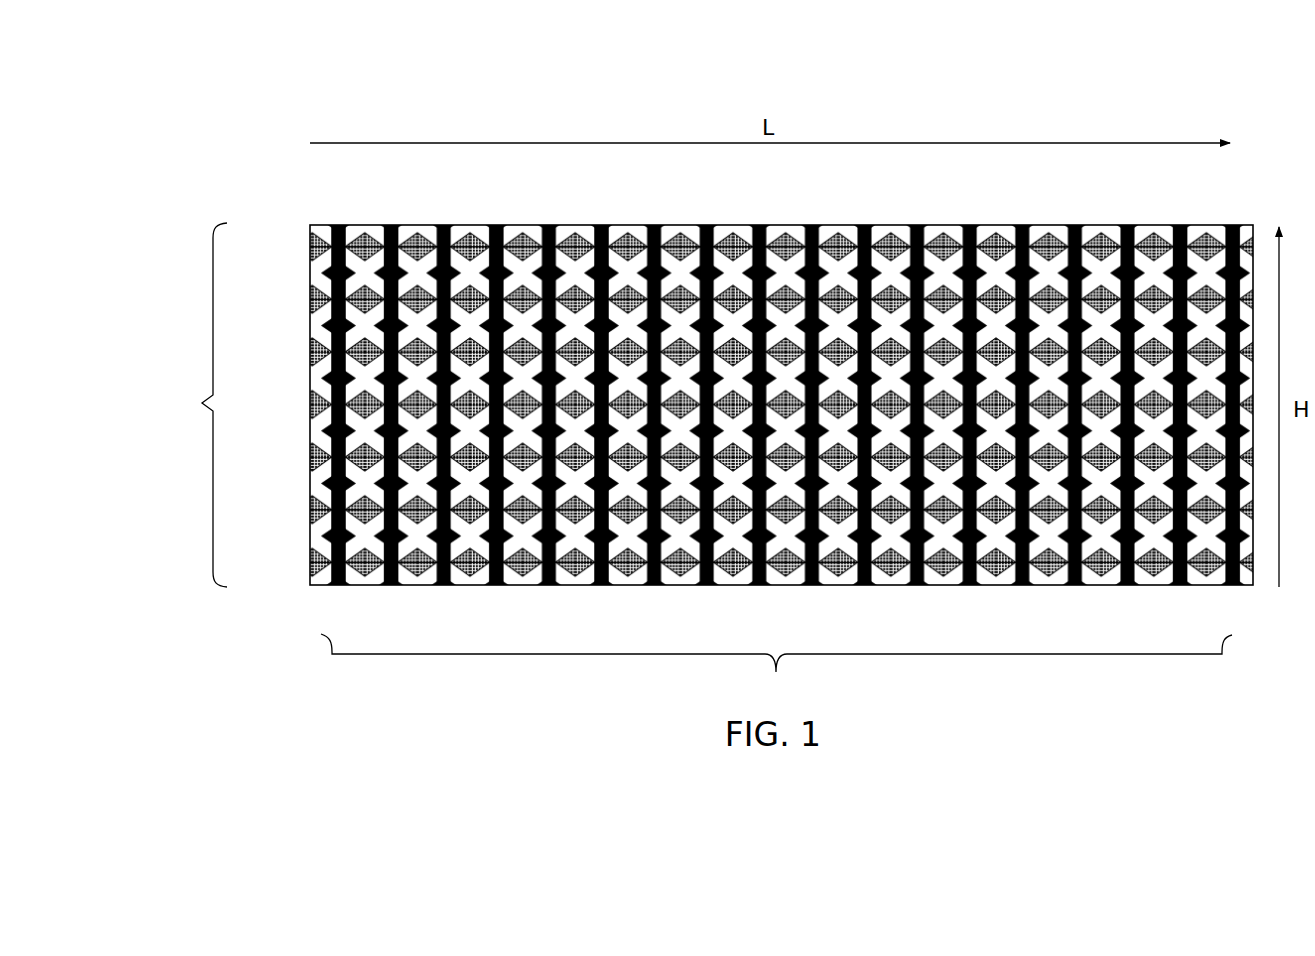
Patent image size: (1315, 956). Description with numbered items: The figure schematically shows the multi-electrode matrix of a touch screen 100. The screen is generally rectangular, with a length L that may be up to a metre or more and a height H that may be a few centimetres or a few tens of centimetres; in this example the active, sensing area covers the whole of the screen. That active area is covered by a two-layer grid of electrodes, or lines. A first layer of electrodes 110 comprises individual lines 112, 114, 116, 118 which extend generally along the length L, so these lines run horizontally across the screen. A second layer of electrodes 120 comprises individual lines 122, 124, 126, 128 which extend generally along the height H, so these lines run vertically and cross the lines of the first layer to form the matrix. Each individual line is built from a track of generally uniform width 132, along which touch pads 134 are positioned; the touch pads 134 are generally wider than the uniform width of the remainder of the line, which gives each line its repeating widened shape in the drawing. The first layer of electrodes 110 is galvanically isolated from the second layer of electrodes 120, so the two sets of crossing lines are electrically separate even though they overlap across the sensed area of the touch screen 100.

The touch screen 100 is at (433, 112).
The first layer of electrodes 110 is at (188, 405).
The individual line 112 is at (311, 566).
The individual line 114 is at (311, 512).
The individual line 116 is at (311, 298).
The individual line 118 is at (311, 243).
The second layer of electrodes 120 is at (776, 672).
The individual line 122 is at (340, 590).
The individual line 124 is at (390, 590).
The individual line 126 is at (1174, 589).
The individual line 128 is at (1227, 589).
The track of generally uniform width 132 is at (490, 226).
The touch pads 134 is at (588, 226).